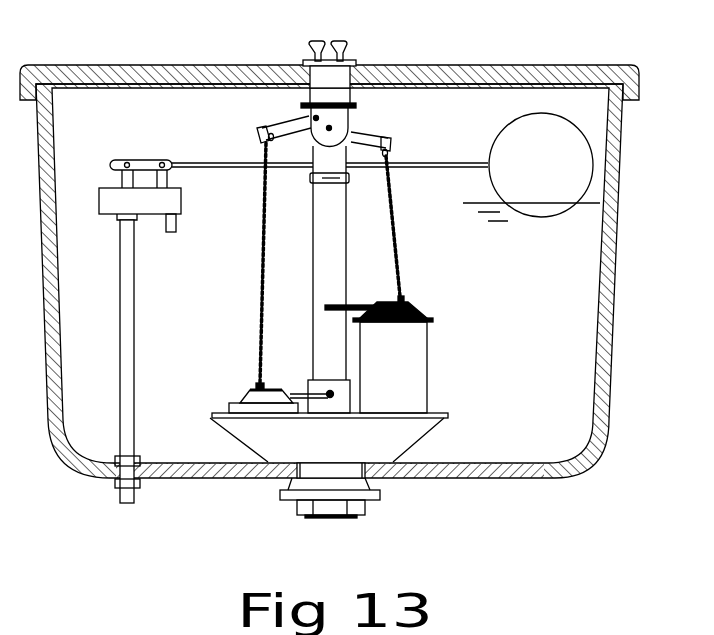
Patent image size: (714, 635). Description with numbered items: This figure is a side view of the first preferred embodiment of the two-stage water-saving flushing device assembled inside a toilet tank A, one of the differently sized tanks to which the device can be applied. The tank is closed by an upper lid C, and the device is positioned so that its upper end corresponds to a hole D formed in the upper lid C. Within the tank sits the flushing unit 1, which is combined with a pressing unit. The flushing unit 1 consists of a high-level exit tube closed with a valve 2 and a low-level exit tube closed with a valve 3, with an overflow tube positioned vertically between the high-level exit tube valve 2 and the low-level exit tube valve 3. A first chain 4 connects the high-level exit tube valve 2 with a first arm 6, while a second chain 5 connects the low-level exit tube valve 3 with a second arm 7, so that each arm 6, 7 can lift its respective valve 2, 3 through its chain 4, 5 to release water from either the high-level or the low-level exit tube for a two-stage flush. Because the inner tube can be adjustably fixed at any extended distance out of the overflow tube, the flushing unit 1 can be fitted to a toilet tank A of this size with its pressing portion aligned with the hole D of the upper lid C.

The toilet tank A is at (615, 290).
The upper lid C is at (478, 66).
The hole D is at (363, 62).
The flushing unit 1 is at (438, 397).
The high-level exit tube valve 2 is at (420, 300).
The low-level exit tube valve 3 is at (243, 396).
The first chain 4 is at (397, 240).
The second chain 5 is at (262, 234).
The first arm 6 is at (258, 126).
The second arm 7 is at (391, 138).